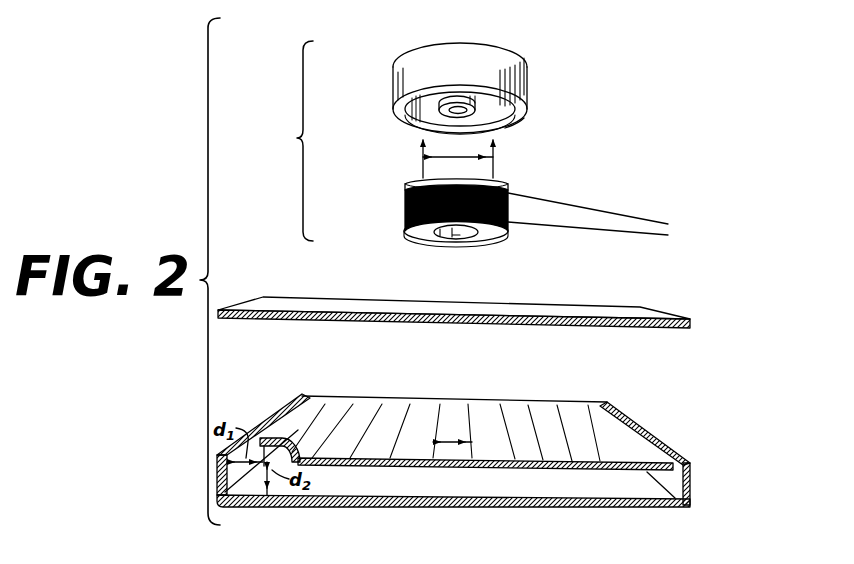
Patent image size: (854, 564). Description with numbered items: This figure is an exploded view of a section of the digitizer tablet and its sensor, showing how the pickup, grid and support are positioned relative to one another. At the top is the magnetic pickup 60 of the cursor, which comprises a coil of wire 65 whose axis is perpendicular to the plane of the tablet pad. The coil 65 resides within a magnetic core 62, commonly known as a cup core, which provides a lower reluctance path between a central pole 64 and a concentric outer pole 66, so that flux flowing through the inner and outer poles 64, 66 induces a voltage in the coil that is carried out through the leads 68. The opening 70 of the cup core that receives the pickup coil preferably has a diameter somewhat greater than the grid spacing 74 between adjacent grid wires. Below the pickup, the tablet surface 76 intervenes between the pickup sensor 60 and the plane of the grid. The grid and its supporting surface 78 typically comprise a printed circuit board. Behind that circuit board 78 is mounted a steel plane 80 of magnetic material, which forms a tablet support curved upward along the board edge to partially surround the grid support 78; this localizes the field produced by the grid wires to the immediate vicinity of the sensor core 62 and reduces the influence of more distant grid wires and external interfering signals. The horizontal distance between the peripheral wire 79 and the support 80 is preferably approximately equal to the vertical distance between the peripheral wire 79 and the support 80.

The magnetic pickup 60 is at (290, 141).
The magnetic core 62 is at (397, 81).
The central pole 64 is at (514, 121).
The concentric outer pole 66 is at (404, 110).
The opening 70 is at (470, 156).
The coil of wire 65 is at (410, 202).
The leads 68 is at (662, 229).
The tablet surface 76 is at (561, 307).
The supporting surface 78 is at (485, 408).
The peripheral wire 79 is at (326, 405).
The grid spacing 74 is at (452, 440).
The steel plane 80 is at (582, 508).